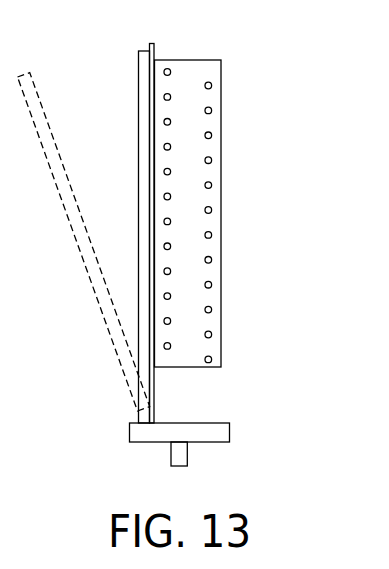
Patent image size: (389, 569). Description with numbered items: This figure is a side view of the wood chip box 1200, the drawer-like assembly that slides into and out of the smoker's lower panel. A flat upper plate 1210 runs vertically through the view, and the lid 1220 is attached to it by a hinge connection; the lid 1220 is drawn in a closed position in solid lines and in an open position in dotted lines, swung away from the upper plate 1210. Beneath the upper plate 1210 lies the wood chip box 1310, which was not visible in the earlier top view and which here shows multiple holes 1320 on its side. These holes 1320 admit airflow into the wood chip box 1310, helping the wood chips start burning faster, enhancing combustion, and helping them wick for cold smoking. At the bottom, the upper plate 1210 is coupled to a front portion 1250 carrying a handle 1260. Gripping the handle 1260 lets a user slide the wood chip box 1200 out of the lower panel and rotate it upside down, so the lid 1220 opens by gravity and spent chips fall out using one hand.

The wood chip box 1200 is at (194, 253).
The upper plate 1210 is at (155, 50).
The lid 1220 is at (138, 86).
The front portion 1250 is at (230, 432).
The handle 1260 is at (187, 452).
The wood chip box 1310 is at (221, 123).
The holes 1320 is at (212, 209).